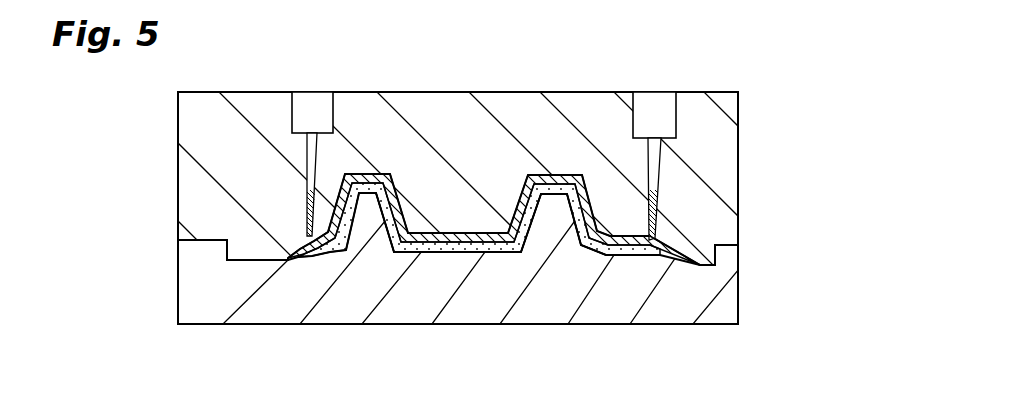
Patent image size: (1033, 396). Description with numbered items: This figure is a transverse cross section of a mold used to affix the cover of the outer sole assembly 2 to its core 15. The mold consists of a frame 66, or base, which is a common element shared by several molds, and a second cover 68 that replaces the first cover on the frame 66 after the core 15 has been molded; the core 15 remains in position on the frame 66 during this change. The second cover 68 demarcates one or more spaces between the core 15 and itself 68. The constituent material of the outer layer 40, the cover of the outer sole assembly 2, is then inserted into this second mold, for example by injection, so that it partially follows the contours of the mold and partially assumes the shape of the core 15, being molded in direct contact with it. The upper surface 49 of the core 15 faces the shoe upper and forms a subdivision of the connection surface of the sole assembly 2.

The outer sole assembly 2 is at (447, 253).
The core 15 is at (500, 248).
The outer layer 40 is at (453, 234).
The upper surface 49 is at (392, 253).
The frame 66 is at (737, 278).
The second cover 68 is at (737, 167).